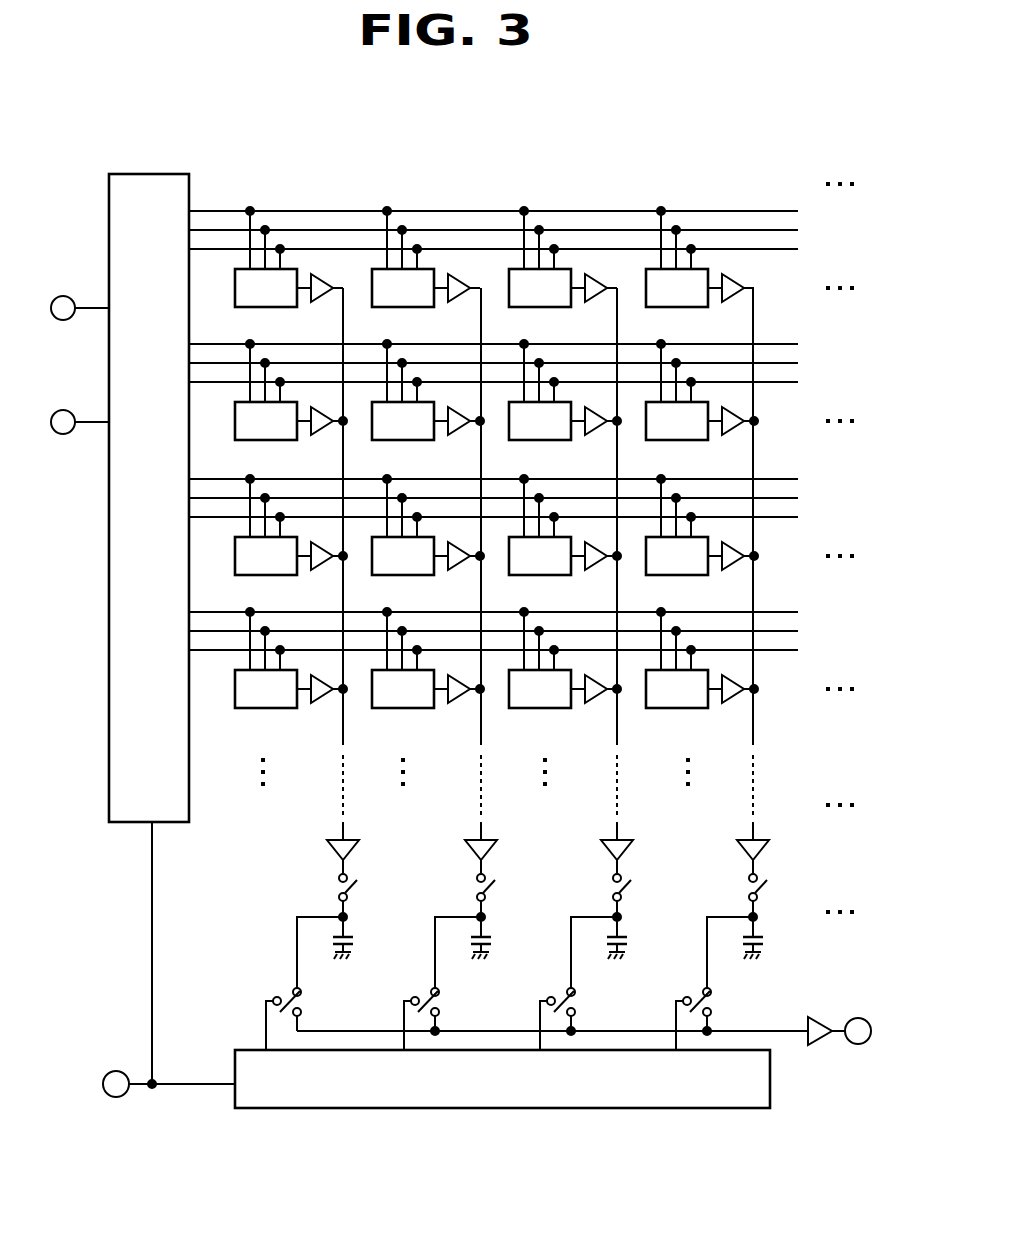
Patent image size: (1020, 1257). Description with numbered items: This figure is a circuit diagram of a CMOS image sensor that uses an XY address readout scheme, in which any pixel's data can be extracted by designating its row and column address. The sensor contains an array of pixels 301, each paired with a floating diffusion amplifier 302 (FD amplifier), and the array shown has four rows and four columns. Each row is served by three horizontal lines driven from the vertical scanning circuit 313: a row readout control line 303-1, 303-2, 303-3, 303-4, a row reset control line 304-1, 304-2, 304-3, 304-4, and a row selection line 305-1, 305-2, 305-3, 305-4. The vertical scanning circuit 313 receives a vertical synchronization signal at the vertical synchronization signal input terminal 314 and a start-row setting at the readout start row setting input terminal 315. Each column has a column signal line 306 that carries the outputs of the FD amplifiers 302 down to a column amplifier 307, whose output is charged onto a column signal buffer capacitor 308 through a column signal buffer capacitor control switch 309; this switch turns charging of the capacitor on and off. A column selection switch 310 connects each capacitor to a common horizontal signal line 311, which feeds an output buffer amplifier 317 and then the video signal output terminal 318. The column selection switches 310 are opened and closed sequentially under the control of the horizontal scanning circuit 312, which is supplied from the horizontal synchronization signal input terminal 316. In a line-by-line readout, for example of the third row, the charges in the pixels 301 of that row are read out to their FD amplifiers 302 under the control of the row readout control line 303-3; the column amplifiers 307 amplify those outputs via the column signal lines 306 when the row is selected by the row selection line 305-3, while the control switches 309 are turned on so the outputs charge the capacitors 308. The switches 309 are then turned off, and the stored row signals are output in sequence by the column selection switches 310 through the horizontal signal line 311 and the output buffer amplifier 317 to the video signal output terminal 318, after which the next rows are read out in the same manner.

The pixel 301 is at (258, 308).
The floating diffusion amplifier 302 is at (317, 302).
The row readout control line 303-1 is at (457, 209).
The row reset control line 304-1 is at (457, 230).
The row selection line 305-1 is at (457, 251).
The row readout control line 303-2 is at (457, 342).
The row reset control line 304-2 is at (457, 363).
The row selection line 305-2 is at (457, 384).
The row readout control line 303-3 is at (457, 477).
The row reset control line 304-3 is at (457, 498).
The row selection line 305-3 is at (457, 519).
The row readout control line 303-4 is at (457, 610).
The row reset control line 304-4 is at (457, 631).
The row selection line 305-4 is at (457, 652).
The column signal line 306 is at (343, 735).
The column amplifier 307 is at (337, 840).
The column signal buffer capacitor 308 is at (343, 960).
The column signal buffer capacitor control switch 309 is at (351, 893).
The column selection switch 310 is at (278, 996).
The horizontal signal line 311 is at (751, 1028).
The horizontal scanning circuit 312 is at (725, 1108).
The vertical scanning circuit 313 is at (123, 823).
The vertical synchronization signal input terminal 314 is at (66, 320).
The readout start row setting input terminal 315 is at (66, 434).
The horizontal synchronization signal input terminal 316 is at (118, 1097).
The output buffer amplifier 317 is at (822, 1018).
The video signal output terminal 318 is at (855, 1044).